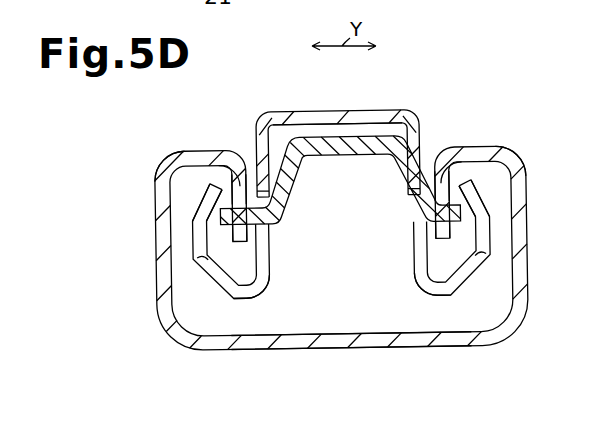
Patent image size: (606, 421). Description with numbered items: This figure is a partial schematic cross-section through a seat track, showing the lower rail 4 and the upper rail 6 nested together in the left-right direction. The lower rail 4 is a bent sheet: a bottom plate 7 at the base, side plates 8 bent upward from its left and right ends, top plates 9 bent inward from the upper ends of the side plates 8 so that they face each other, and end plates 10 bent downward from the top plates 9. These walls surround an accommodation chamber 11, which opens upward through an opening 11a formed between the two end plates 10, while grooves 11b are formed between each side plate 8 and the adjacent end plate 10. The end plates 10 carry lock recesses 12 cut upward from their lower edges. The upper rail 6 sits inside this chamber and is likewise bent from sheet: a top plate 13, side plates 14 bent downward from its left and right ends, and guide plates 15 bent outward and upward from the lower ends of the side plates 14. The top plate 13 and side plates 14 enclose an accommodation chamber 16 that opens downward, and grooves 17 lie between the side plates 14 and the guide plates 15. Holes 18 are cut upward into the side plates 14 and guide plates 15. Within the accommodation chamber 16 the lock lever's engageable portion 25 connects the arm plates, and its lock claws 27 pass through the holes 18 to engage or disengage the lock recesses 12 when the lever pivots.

The lower rail 4 is at (407, 357).
The upper rail 6 is at (381, 104).
The bottom plate 7 is at (292, 348).
The side plates 8 is at (160, 276).
The top plates 9 is at (195, 162).
The end plates 10 is at (222, 175).
The accommodation chamber 11 is at (335, 332).
The opening 11a is at (250, 167).
The grooves 11b is at (183, 187).
The lock recesses 12 is at (248, 237).
The top plate 13 is at (312, 112).
The side plates 14 is at (258, 130).
The guide plates 15 is at (200, 202).
The accommodation chamber 16 is at (340, 123).
The grooves 17 is at (220, 283).
The holes 18 is at (266, 286).
The engageable portion 25 is at (340, 156).
The lock claws 27 is at (215, 226).